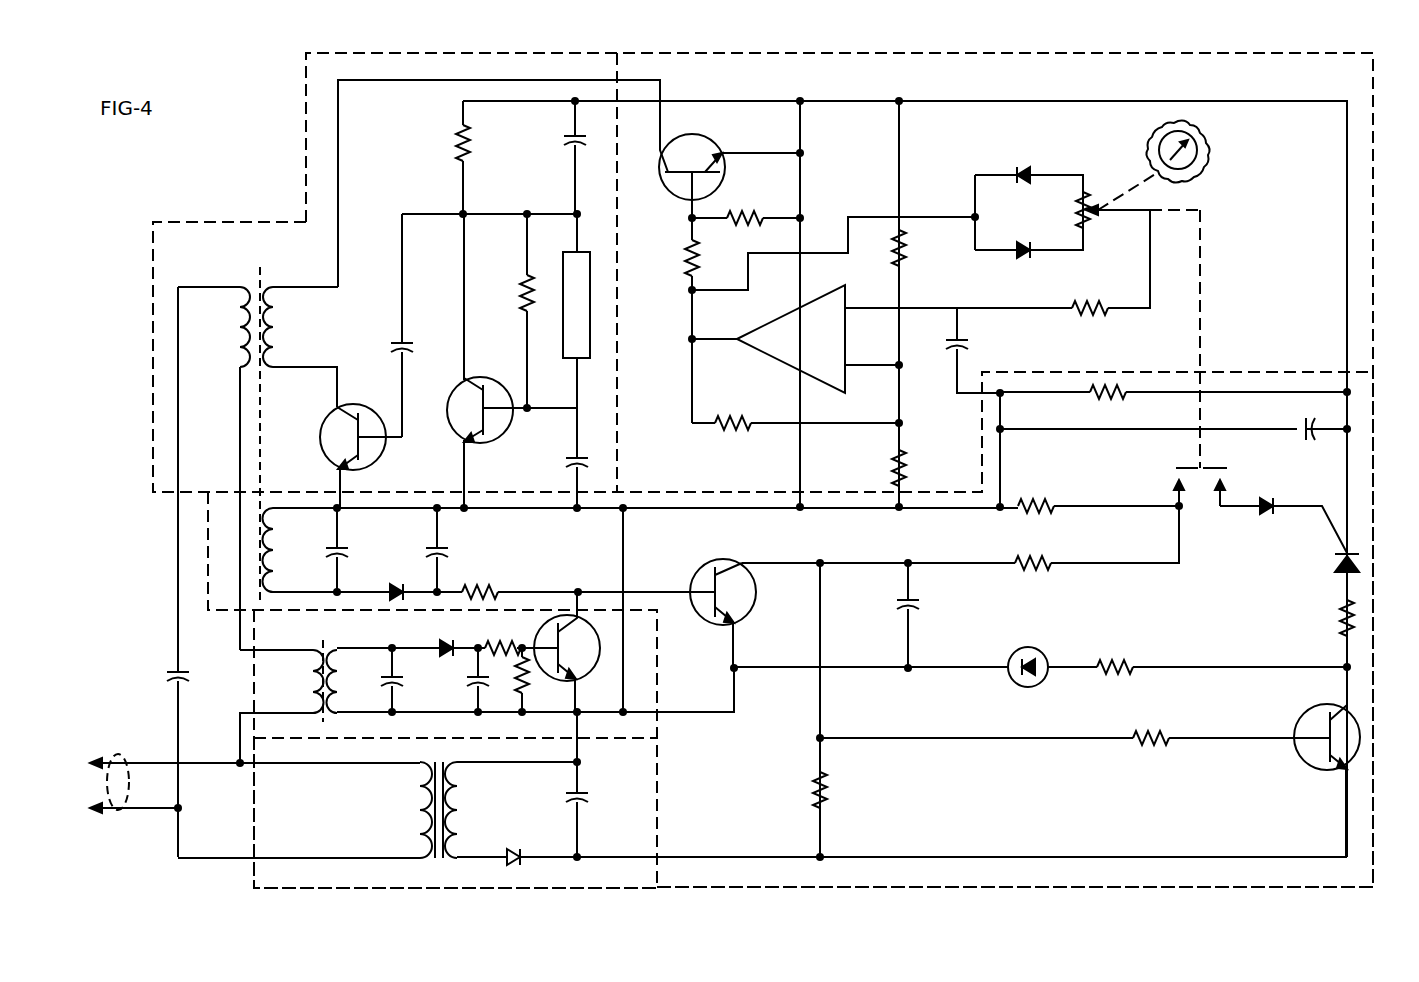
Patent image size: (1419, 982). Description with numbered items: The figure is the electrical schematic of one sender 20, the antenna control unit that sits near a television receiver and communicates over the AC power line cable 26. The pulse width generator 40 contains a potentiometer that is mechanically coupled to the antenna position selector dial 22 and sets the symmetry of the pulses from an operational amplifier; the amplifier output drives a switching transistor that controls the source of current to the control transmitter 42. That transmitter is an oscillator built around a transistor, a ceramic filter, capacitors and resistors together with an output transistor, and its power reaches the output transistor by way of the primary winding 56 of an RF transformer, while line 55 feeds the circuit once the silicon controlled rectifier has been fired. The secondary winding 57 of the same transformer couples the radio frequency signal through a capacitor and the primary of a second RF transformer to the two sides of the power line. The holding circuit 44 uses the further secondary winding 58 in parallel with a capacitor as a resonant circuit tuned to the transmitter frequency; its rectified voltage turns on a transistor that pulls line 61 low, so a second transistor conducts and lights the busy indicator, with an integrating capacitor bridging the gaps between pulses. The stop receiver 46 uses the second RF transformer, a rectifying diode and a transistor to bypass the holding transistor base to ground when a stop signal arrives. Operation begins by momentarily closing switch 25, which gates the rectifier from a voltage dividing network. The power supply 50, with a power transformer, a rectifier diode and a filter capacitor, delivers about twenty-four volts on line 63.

The sender 20 is at (1388, 472).
The antenna position selector dial 22 is at (1198, 154).
The switch 25 is at (1174, 468).
The cable 26 is at (118, 812).
The pulse width generator 40 is at (1365, 198).
The control transmitter 42 is at (306, 206).
The holding circuit 44 is at (1278, 882).
The stop receiver 46 is at (267, 677).
The power supply 50 is at (553, 880).
The line 55 is at (966, 100).
The primary winding of RF transformer T1 56 is at (279, 334).
The secondary winding of transformer T1 57 is at (244, 345).
The secondary winding of transformer T1 58 is at (283, 573).
The line 61 is at (779, 563).
The line 63 is at (668, 858).